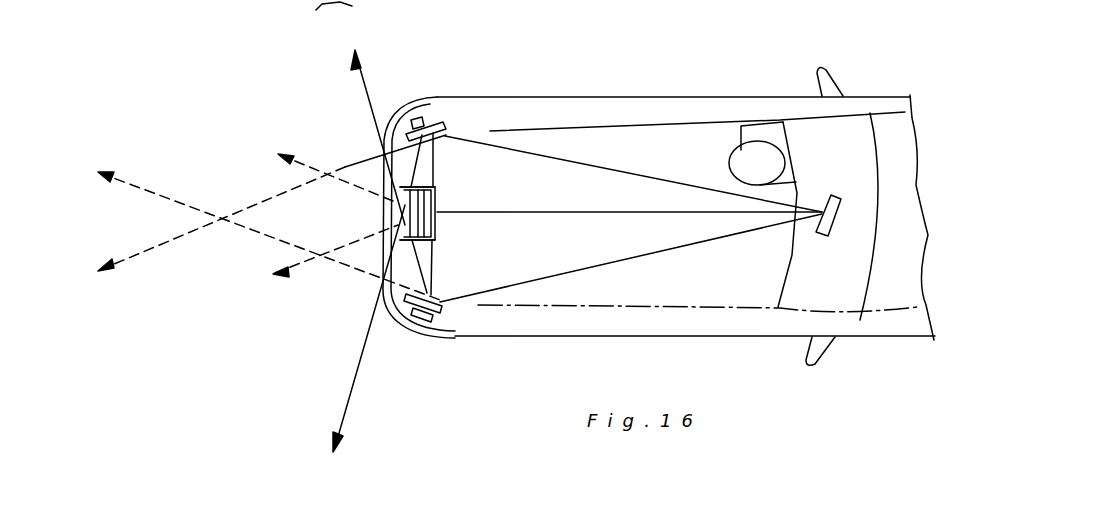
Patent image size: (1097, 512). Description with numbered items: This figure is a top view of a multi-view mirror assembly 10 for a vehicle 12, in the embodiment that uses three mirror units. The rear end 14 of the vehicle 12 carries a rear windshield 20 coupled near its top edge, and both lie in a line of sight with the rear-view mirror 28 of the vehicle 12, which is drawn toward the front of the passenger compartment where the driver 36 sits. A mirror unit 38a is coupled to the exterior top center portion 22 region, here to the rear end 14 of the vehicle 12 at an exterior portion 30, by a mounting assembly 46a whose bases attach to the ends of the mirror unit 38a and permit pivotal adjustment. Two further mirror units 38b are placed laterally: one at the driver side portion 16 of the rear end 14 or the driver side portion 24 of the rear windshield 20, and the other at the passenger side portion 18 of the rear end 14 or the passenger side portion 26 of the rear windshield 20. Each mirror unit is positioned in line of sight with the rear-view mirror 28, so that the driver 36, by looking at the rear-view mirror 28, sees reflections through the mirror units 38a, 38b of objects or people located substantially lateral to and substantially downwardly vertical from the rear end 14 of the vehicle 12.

The multi-view mirror assembly 10 is at (465, 88).
The vehicle 12 is at (575, 331).
The rear end 14 is at (415, 331).
The driver side portion 16 is at (448, 114).
The passenger side portion 18 is at (437, 297).
The rear windshield 20 is at (372, 277).
The exterior top center portion 22 is at (437, 205).
The driver side portion 24 is at (450, 140).
The passenger side portion 26 is at (446, 287).
The rear-view mirror 28 is at (833, 198).
The exterior portion 30 is at (361, 301).
The driver 36 is at (742, 140).
The mirror unit 38a is at (410, 212).
The mirror unit 38b is at (420, 118).
The mounting assembly 46a is at (437, 186).